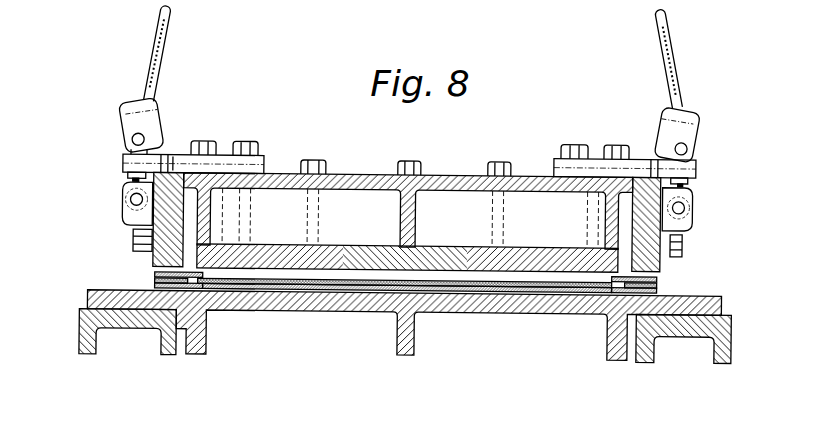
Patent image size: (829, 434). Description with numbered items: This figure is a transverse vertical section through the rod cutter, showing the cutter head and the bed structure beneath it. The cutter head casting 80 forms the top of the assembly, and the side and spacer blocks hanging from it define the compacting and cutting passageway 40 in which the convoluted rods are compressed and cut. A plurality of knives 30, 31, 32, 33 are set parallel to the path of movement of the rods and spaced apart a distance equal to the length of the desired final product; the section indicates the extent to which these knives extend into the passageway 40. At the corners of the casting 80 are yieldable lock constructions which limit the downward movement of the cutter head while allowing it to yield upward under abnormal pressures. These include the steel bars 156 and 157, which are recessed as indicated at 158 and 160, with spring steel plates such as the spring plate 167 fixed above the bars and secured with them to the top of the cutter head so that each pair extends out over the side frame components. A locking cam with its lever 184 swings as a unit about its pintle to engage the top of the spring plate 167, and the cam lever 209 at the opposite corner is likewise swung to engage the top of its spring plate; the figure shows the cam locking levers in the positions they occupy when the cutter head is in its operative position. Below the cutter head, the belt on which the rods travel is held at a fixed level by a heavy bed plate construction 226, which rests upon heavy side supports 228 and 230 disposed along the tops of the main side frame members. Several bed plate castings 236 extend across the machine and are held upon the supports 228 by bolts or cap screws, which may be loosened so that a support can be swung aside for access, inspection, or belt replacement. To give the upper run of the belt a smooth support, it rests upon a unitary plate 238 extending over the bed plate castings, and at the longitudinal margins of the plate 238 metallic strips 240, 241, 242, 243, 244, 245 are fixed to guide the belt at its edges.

The lever 184 is at (155, 38).
The recess 160 is at (121, 163).
The spring steel plate 167 is at (174, 159).
The steel bar 156 is at (263, 164).
The cutter head casting 80 is at (365, 176).
The steel bar 157 is at (546, 171).
The cam lever 209 is at (673, 59).
The recess 158 is at (694, 164).
The compacting and cutting passageway 40 is at (422, 275).
The knife 30 is at (222, 245).
The knife 31 is at (343, 247).
The knife 32 is at (468, 247).
The knife 33 is at (590, 247).
The metallic strip 243 is at (155, 277).
The metallic strip 244 is at (155, 282).
The metallic strip 245 is at (155, 286).
The metallic strip 240 is at (657, 277).
The metallic strip 241 is at (658, 283).
The metallic strip 242 is at (658, 288).
The bed plate construction 226 is at (722, 297).
The side support 228 is at (80, 335).
The side support 230 is at (733, 340).
The bed plate casting 236 is at (198, 355).
The unitary plate 238 is at (303, 290).